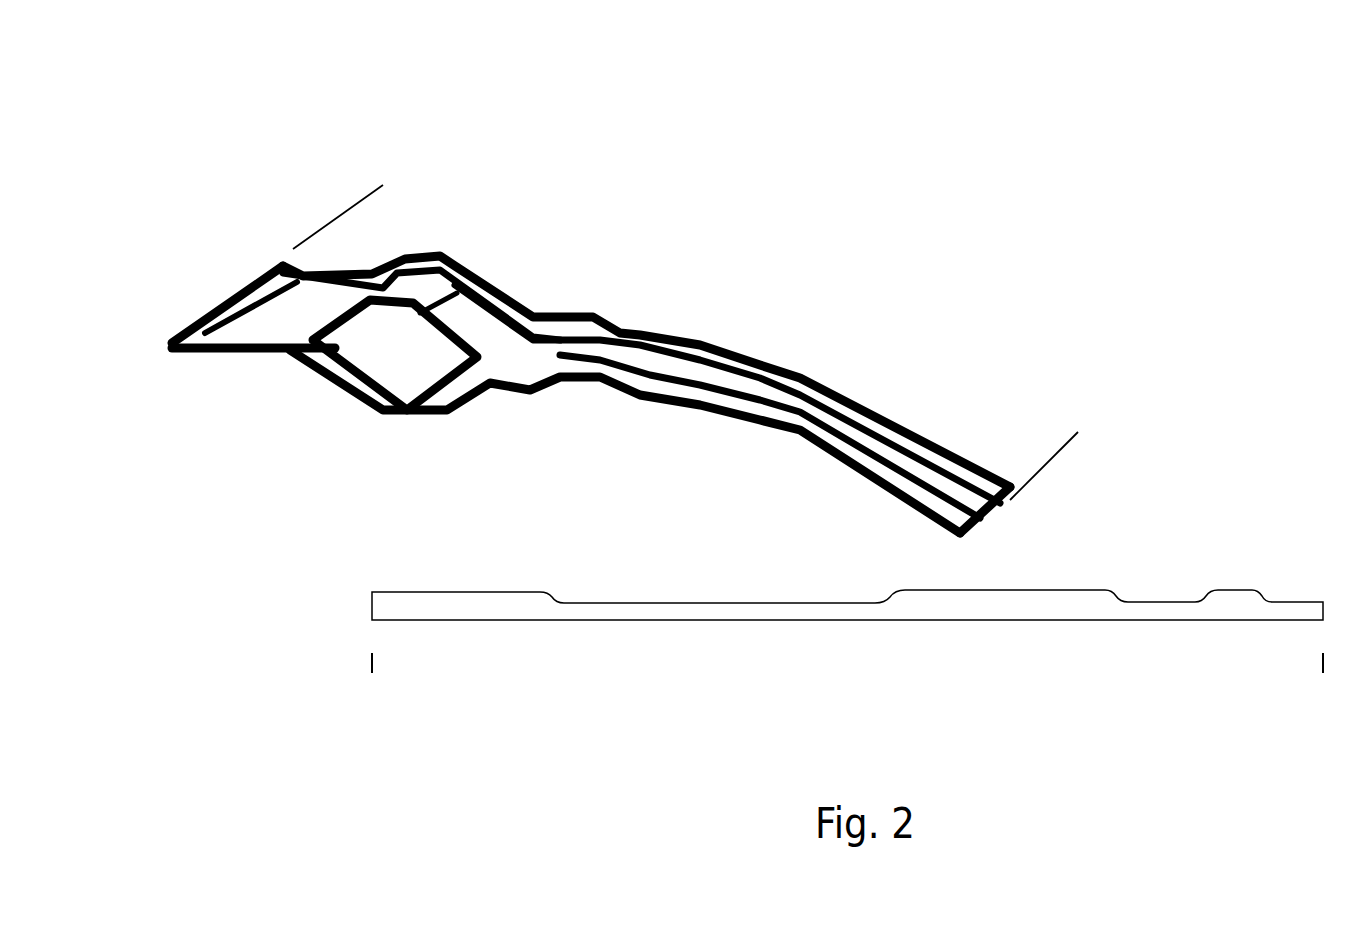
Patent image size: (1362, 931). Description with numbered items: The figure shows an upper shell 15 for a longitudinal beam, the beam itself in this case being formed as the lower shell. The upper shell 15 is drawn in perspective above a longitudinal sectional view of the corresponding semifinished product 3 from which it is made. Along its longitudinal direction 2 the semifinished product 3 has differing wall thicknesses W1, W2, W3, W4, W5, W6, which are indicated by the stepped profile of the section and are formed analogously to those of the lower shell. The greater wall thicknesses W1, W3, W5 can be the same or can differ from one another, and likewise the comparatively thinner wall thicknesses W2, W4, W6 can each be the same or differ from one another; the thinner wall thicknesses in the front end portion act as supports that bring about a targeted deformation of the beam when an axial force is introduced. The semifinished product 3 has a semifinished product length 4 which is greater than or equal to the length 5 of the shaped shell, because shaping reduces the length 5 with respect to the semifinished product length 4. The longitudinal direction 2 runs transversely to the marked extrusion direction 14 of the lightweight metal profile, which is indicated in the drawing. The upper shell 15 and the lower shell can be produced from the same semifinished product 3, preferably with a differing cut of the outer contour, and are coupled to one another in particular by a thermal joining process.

The longitudinal direction 2 is at (645, 191).
The semifinished product 3 is at (355, 610).
The semifinished product length 4 is at (1322, 663).
The length of the longitudinal beam 5 is at (1062, 440).
The extrusion direction 14 is at (401, 128).
The upper shell 15 is at (823, 250).
The wall thickness W1 is at (458, 653).
The wall thickness W2 is at (685, 648).
The wall thickness W3 is at (970, 650).
The wall thickness W4 is at (1156, 648).
The wall thickness W5 is at (1230, 650).
The wall thickness W6 is at (1295, 648).